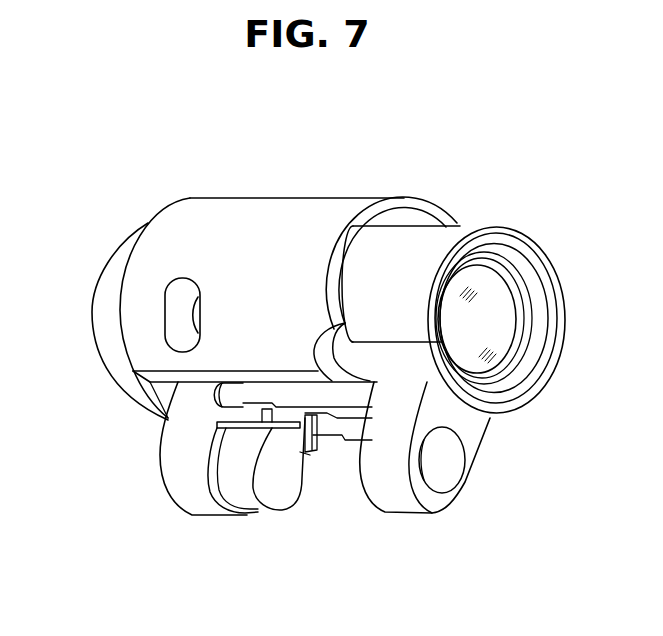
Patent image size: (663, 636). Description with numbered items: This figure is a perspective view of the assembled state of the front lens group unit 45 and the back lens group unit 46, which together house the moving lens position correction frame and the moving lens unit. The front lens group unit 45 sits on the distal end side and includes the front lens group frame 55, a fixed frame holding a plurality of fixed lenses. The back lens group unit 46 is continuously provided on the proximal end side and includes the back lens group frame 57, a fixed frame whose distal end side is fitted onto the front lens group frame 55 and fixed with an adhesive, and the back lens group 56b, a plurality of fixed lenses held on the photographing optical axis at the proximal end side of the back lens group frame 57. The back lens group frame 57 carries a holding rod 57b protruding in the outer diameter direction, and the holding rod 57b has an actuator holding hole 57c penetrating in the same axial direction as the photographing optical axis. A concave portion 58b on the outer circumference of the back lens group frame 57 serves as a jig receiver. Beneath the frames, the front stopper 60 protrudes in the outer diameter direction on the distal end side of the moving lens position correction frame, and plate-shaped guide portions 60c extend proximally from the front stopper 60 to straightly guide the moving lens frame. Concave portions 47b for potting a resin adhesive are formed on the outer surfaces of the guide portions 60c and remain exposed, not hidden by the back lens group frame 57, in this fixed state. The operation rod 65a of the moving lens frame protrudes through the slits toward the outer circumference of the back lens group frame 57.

The front lens group unit 45 is at (125, 231).
The back lens group unit 46 is at (303, 194).
The front lens group frame 55 is at (102, 277).
The back lens group 56b is at (496, 305).
The back lens group frame 57 is at (242, 197).
The holding rod 57b is at (412, 515).
The actuator holding hole 57c is at (440, 492).
The concave portion 58b is at (177, 312).
The concave portions 47b is at (230, 397).
The front stopper 60 is at (205, 517).
The guide portions 60c is at (218, 437).
The operation rod 65a is at (265, 512).